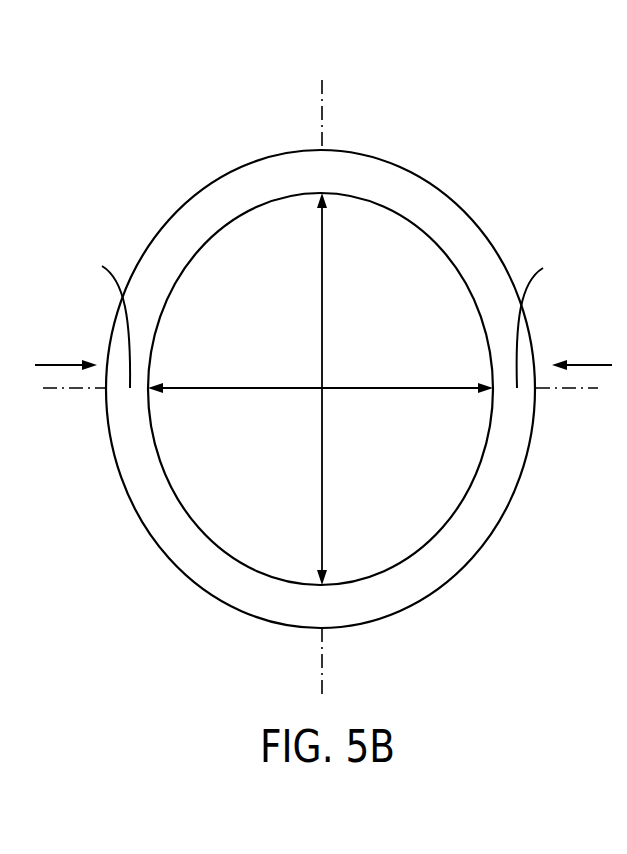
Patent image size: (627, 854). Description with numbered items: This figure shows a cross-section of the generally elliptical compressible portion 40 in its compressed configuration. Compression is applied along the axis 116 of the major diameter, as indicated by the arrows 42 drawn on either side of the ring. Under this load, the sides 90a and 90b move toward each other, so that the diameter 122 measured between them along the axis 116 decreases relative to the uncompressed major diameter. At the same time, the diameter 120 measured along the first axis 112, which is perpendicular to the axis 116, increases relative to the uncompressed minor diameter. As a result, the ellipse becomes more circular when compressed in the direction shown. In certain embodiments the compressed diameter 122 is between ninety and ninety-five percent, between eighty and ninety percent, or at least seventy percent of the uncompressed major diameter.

The compressible portion 40 is at (213, 570).
The arrows 42 is at (57, 364).
The side 90a is at (96, 320).
The side 90b is at (552, 321).
The first axis 112 is at (322, 113).
The axis of the major diameter 116 is at (75, 392).
The diameter 120 is at (322, 363).
The diameter 122 is at (377, 390).